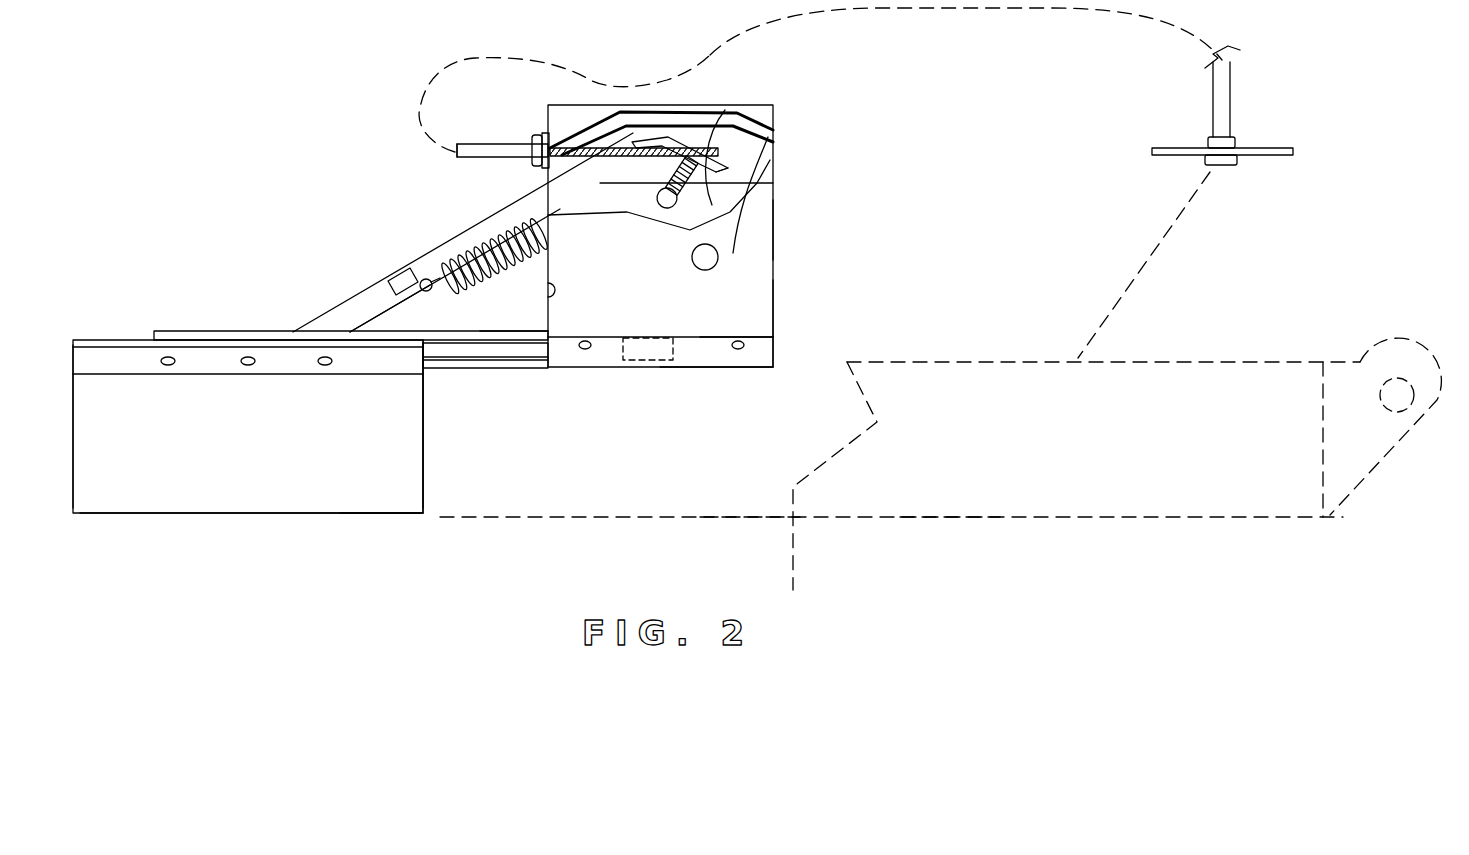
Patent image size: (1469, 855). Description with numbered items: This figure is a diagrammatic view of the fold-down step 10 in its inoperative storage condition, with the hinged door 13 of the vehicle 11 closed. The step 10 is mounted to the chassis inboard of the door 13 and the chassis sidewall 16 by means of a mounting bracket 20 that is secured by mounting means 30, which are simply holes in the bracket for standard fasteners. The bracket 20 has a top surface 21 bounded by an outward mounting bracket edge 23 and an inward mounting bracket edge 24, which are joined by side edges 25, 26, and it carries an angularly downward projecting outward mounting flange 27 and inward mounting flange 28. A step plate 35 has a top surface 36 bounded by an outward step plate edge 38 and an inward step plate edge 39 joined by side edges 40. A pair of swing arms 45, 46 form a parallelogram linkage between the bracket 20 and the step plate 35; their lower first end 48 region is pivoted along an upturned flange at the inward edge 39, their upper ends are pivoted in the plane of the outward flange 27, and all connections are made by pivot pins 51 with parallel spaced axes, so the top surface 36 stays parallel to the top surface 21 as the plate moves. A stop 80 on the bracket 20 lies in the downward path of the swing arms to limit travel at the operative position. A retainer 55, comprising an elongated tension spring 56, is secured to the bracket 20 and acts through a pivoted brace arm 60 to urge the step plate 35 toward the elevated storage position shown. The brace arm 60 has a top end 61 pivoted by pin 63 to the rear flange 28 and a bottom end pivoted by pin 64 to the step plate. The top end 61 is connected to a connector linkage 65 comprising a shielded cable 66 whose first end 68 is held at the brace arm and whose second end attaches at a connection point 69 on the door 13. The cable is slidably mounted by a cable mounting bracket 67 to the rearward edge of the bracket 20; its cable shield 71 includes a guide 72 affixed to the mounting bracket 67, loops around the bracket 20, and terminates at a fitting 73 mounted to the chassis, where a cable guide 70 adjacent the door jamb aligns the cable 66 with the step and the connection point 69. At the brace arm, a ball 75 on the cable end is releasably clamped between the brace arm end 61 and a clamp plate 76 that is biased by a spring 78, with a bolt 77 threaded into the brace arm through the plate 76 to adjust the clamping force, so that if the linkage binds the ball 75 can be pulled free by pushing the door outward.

The fold-down step 10 is at (827, 82).
The vehicle 11 is at (650, 520).
The hinged door 13 is at (958, 497).
The chassis sidewall 16 is at (752, 518).
The mounting bracket 20 is at (778, 223).
The top surface 21 is at (627, 325).
The outward mounting bracket edge 23 is at (740, 336).
The inward mounting bracket edge 24 is at (767, 123).
The mounting bracket side edge 25 is at (550, 290).
The mounting bracket side edge 26 is at (775, 303).
The outward mounting flange 27 is at (680, 368).
The inward mounting flange 28 is at (772, 186).
The mounting means 30 is at (697, 263).
The step plate 35 is at (243, 518).
The step plate top surface 36 is at (242, 475).
The outward step plate edge 38 is at (365, 514).
The inward step plate edge 39 is at (424, 378).
The step plate side edges 40 is at (75, 458).
The swing arm 45 is at (498, 366).
The swing arm 46 is at (513, 338).
The lower first end 48 is at (166, 330).
The pivot pins 51 is at (168, 366).
The retainer 55 is at (458, 237).
The tension spring 56 is at (550, 240).
The brace arm 60 is at (340, 296).
The top end of brace arm 61 is at (686, 143).
The pin 63 is at (655, 147).
The pin 64 is at (248, 366).
The connector linkage 65 is at (477, 143).
The shielded cable 66 is at (588, 147).
The cable mounting bracket 67 is at (536, 170).
The first cable end 68 is at (743, 168).
The connection point 69 is at (1075, 362).
The cable guide 70 is at (1232, 166).
The cable shield 71 is at (455, 152).
The guide 72 is at (537, 137).
The fitting 73 is at (1208, 140).
The ball 75 is at (725, 110).
The clamp plate 76 is at (718, 210).
The bolt 77 is at (655, 203).
The spring 78 is at (735, 255).
The stop 80 is at (645, 361).